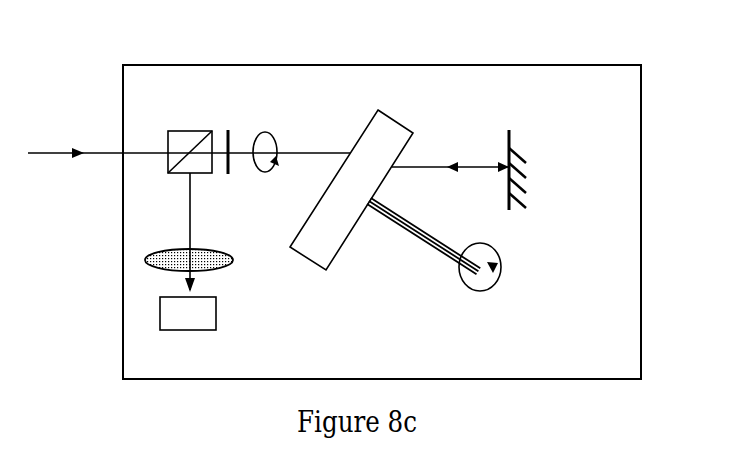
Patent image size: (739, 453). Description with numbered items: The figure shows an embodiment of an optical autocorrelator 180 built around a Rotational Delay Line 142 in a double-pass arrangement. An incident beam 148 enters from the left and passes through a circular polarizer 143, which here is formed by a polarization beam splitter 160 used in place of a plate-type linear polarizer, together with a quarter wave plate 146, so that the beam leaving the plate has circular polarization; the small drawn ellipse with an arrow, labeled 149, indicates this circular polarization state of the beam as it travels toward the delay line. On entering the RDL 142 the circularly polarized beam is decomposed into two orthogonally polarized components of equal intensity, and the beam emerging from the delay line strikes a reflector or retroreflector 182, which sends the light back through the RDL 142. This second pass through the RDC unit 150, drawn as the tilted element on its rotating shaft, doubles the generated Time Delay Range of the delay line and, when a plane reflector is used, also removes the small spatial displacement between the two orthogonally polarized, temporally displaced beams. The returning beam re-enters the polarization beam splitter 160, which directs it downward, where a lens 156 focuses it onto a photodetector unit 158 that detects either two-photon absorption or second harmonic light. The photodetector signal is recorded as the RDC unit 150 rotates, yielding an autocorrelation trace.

The autocorrelator 180 is at (266, 50).
The incident beam 148 is at (82, 158).
The polarization beam splitter 160 is at (167, 122).
The quarter wave plate 146 is at (228, 123).
The circularly polarized beam 149 is at (300, 147).
The Rotational Delay Line 142 is at (416, 100).
The RDC unit 150 is at (305, 256).
The reflector or retroreflector 182 is at (497, 145).
The circular polarizer 143 is at (150, 210).
The lens 156 is at (143, 259).
The photodetector unit 158 is at (220, 308).